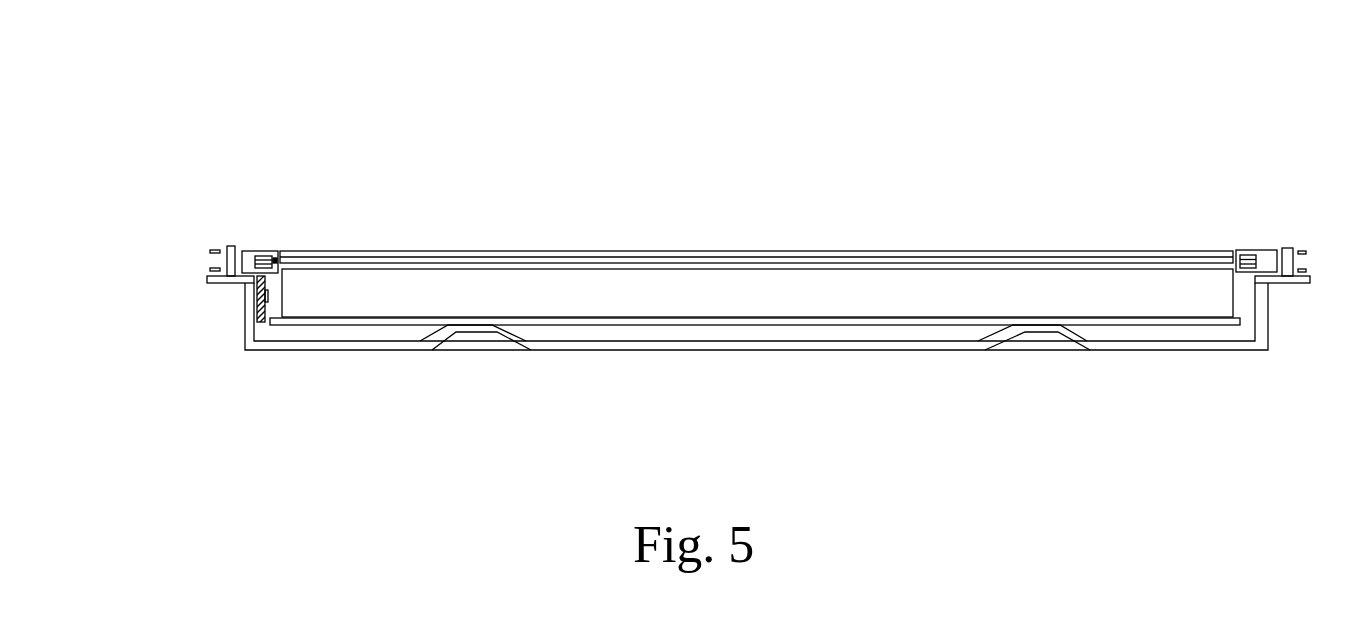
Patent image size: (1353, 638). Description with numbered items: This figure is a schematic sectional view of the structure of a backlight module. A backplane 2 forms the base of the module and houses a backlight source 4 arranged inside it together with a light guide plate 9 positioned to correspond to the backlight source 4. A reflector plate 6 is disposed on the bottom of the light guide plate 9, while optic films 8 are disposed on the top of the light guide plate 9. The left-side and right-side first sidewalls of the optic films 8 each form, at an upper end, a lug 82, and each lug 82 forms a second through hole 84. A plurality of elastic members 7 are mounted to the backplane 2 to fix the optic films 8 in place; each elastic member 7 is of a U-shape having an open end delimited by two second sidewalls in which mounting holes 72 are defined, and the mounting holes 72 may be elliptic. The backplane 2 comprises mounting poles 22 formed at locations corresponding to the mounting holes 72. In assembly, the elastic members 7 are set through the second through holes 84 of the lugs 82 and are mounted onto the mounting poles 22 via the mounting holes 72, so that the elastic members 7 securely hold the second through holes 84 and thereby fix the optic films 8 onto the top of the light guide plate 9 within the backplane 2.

The backplane 2 is at (348, 345).
The backlight source 4 is at (257, 300).
The reflector plate 6 is at (925, 320).
The elastic member 7 is at (248, 253).
The optic films 8 is at (608, 258).
The light guide plate 9 is at (368, 300).
The mounting pole 22 is at (225, 253).
The mounting hole 72 is at (236, 250).
The lug 82 is at (272, 253).
The second through hole 84 is at (285, 257).